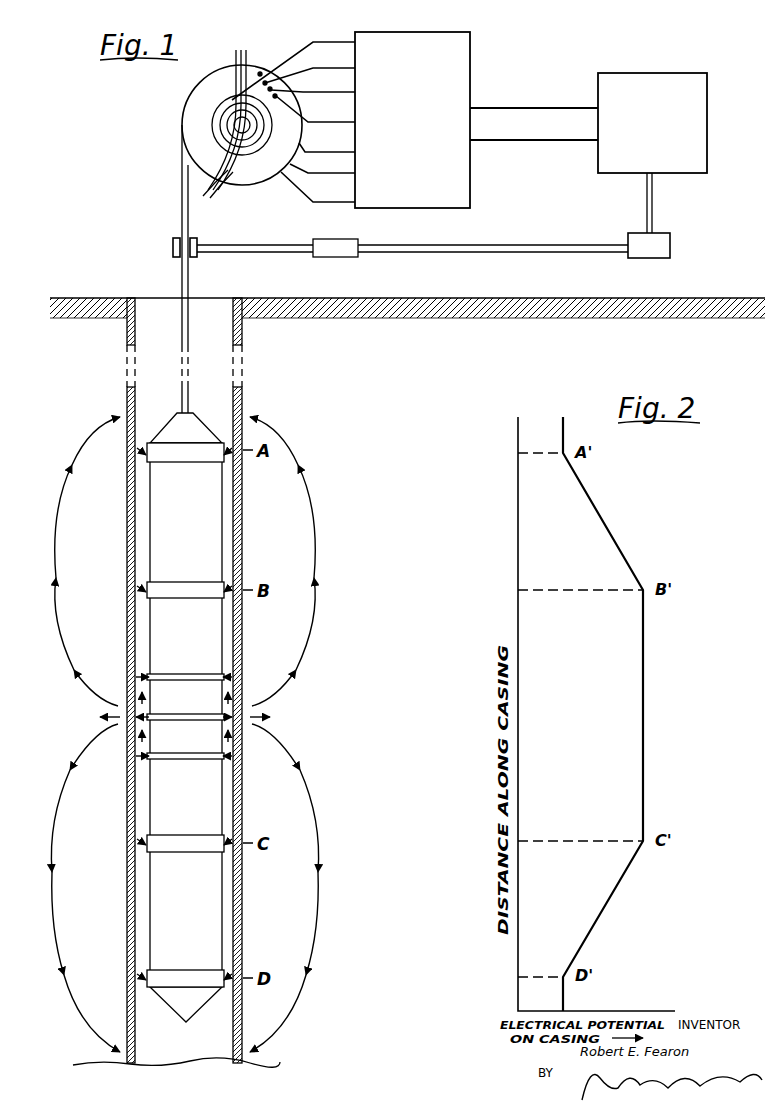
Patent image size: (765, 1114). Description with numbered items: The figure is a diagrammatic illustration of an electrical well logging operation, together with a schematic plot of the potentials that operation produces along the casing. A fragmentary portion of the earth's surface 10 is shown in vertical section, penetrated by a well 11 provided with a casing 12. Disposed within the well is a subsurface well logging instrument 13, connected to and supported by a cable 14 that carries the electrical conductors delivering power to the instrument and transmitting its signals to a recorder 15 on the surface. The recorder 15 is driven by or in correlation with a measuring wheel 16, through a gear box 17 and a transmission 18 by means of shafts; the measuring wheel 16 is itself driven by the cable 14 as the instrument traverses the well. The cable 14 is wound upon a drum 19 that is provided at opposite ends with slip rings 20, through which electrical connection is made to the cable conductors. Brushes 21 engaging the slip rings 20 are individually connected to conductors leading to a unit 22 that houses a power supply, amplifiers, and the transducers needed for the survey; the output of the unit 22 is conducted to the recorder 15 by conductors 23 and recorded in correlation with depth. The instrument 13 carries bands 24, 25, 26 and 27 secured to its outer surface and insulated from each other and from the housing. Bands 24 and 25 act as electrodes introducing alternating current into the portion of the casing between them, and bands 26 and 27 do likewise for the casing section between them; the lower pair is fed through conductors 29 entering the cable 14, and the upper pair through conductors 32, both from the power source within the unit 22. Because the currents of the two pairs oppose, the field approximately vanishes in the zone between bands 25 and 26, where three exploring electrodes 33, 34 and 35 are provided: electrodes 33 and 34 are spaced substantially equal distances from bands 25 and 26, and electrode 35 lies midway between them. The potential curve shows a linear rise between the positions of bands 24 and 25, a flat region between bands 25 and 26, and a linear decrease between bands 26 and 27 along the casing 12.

The earth's surface 10 is at (297, 412).
The well 11 is at (217, 378).
The casing 12 is at (243, 497).
The subsurface well logging instrument 13 is at (222, 530).
The cable 14 is at (189, 292).
The recorder 15 is at (708, 86).
The measuring wheel 16 is at (173, 244).
The gear box 17 is at (340, 239).
The transmission 18 is at (669, 246).
The drum 19 is at (188, 107).
The slip rings 20 is at (218, 188).
The brushes 21 is at (227, 115).
The unit 22 is at (435, 33).
The conductors 23 is at (526, 140).
The band 24 is at (208, 447).
The band 25 is at (207, 583).
The band 26 is at (212, 838).
The band 27 is at (205, 975).
The conductors 29 is at (317, 46).
The conductors 32 is at (322, 95).
The electrode 33 is at (210, 674).
The electrode 34 is at (215, 757).
The electrode 35 is at (205, 714).